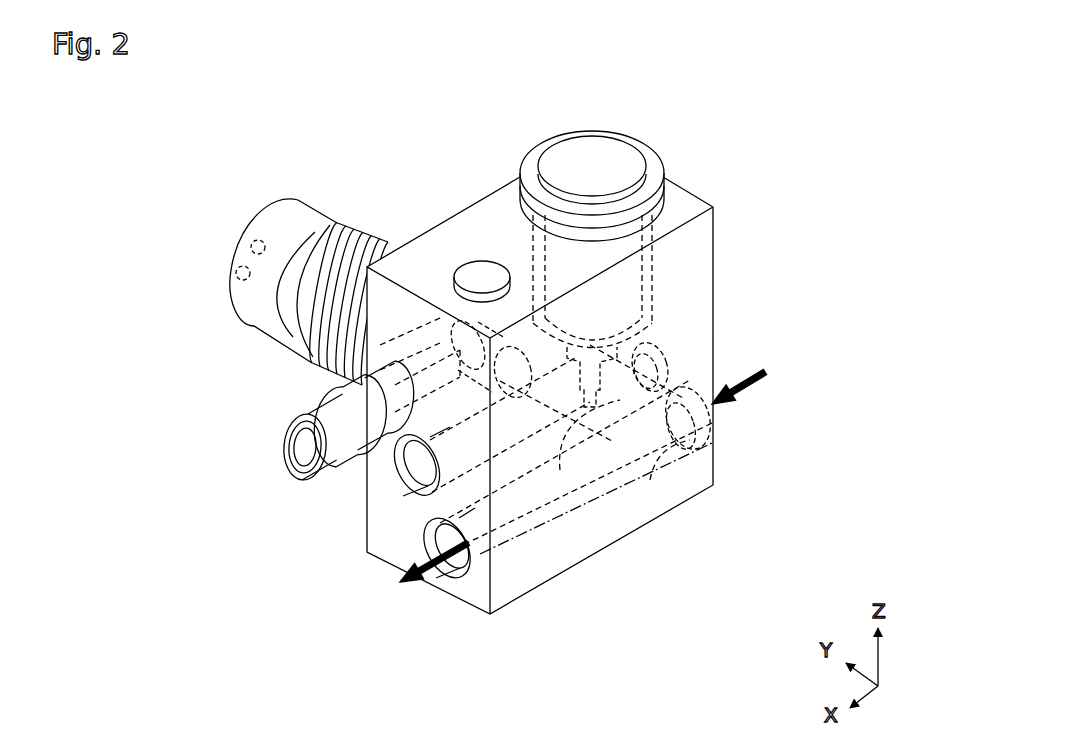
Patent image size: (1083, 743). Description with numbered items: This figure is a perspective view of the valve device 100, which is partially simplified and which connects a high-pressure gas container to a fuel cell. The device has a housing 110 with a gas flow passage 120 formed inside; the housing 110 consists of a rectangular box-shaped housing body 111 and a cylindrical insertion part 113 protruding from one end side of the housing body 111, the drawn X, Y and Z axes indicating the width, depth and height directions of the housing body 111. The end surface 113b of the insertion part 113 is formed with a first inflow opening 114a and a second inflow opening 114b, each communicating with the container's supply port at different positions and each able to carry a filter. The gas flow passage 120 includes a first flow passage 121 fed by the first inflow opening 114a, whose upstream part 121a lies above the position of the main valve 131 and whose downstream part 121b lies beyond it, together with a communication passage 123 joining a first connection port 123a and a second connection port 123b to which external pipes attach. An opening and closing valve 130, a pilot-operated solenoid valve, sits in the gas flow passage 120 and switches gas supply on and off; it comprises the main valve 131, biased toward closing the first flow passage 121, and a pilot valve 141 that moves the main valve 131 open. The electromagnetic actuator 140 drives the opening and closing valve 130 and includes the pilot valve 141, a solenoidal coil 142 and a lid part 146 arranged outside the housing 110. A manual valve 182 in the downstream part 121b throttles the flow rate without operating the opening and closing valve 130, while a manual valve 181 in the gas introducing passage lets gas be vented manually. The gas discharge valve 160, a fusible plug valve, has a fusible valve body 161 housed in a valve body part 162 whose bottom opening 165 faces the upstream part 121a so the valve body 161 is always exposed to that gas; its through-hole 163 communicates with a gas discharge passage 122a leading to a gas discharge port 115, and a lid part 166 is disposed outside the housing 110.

The valve device 100 is at (156, 117).
The housing 110 is at (348, 130).
The housing body 111 is at (378, 241).
The insertion part 113 is at (266, 222).
The end surface 113b is at (232, 252).
The first inflow opening 114a is at (250, 242).
The second inflow opening 114b is at (236, 275).
The gas discharge port 115 is at (420, 468).
The gas flow passage 120 is at (505, 413).
The first flow passage 121 is at (657, 437).
The upstream part 121a is at (565, 451).
The downstream part 121b is at (583, 486).
The gas discharge passage 122a is at (397, 408).
The communication passage 123 is at (553, 482).
The first connection port 123a is at (695, 428).
The second connection port 123b is at (453, 550).
The opening and closing valve 130 is at (158, 330).
The main valve 131 is at (430, 330).
The electromagnetic actuator 140 is at (678, 196).
The pilot valve 141 is at (692, 470).
The solenoidal coil 142 is at (632, 270).
The lid part 146 is at (655, 173).
The gas discharge valve 160 is at (280, 447).
The valve body 161 is at (358, 390).
The valve body part 162 is at (405, 365).
The through-hole 163 is at (303, 467).
The opening 165 is at (385, 352).
The lid part 166 is at (291, 452).
The manual valve 181 is at (490, 275).
The manual valve 182 is at (668, 362).